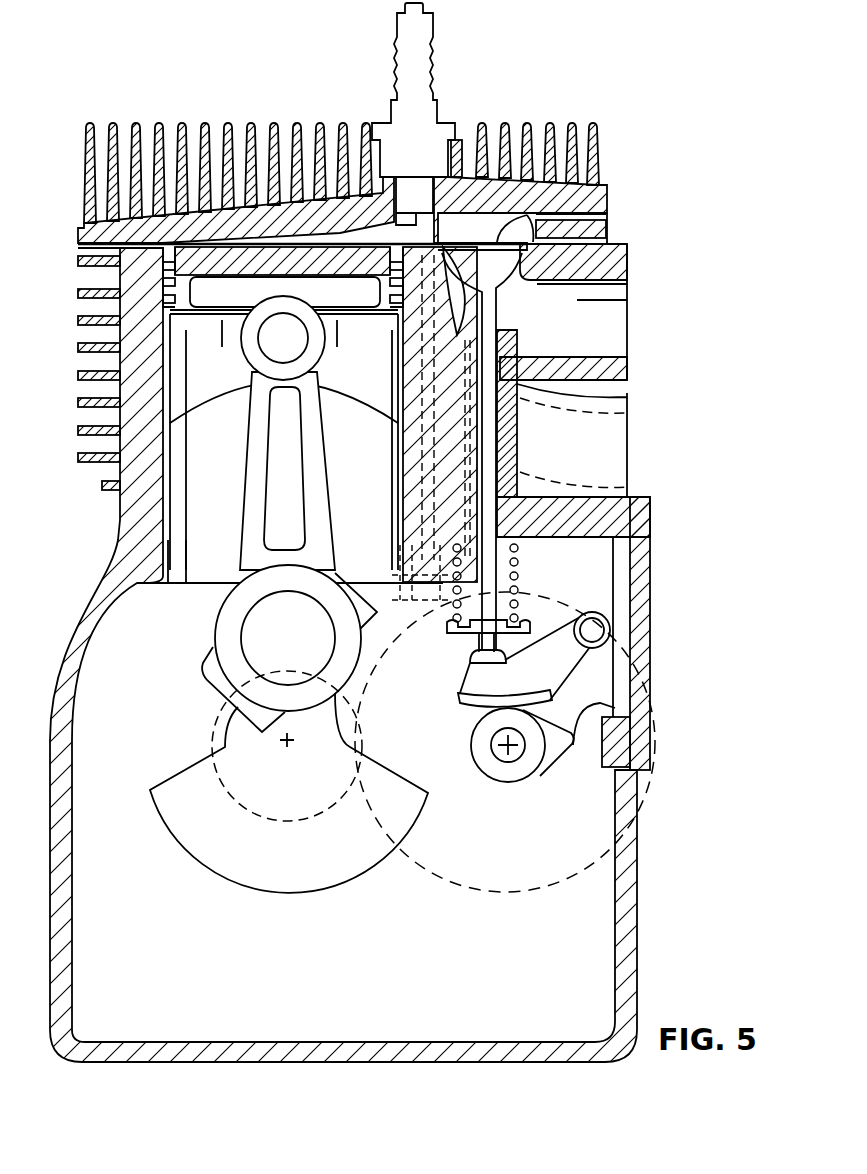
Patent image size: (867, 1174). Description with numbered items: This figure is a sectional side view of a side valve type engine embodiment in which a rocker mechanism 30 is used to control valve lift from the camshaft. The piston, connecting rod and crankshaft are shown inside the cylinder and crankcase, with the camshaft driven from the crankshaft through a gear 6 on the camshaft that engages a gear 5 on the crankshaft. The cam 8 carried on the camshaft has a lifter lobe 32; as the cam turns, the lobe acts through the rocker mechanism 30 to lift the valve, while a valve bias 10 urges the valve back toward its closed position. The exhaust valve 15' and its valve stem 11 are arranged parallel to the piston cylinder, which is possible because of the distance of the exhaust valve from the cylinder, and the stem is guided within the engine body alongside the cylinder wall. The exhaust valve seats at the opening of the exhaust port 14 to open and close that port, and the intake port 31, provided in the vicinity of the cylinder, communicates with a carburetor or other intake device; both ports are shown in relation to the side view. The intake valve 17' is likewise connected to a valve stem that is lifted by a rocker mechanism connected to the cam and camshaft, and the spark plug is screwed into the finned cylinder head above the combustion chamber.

The gear 5 is at (318, 820).
The gear 6 is at (534, 892).
The cam 8 is at (550, 758).
The valve bias 10 is at (470, 598).
The valve stem 11 is at (402, 477).
The exhaust port 14 is at (605, 320).
The exhaust valve 15' is at (598, 208).
The intake valve 17' is at (483, 363).
The rocker mechanism 30 is at (567, 667).
The intake port 31 is at (600, 450).
The lifter lobe 32 is at (640, 718).